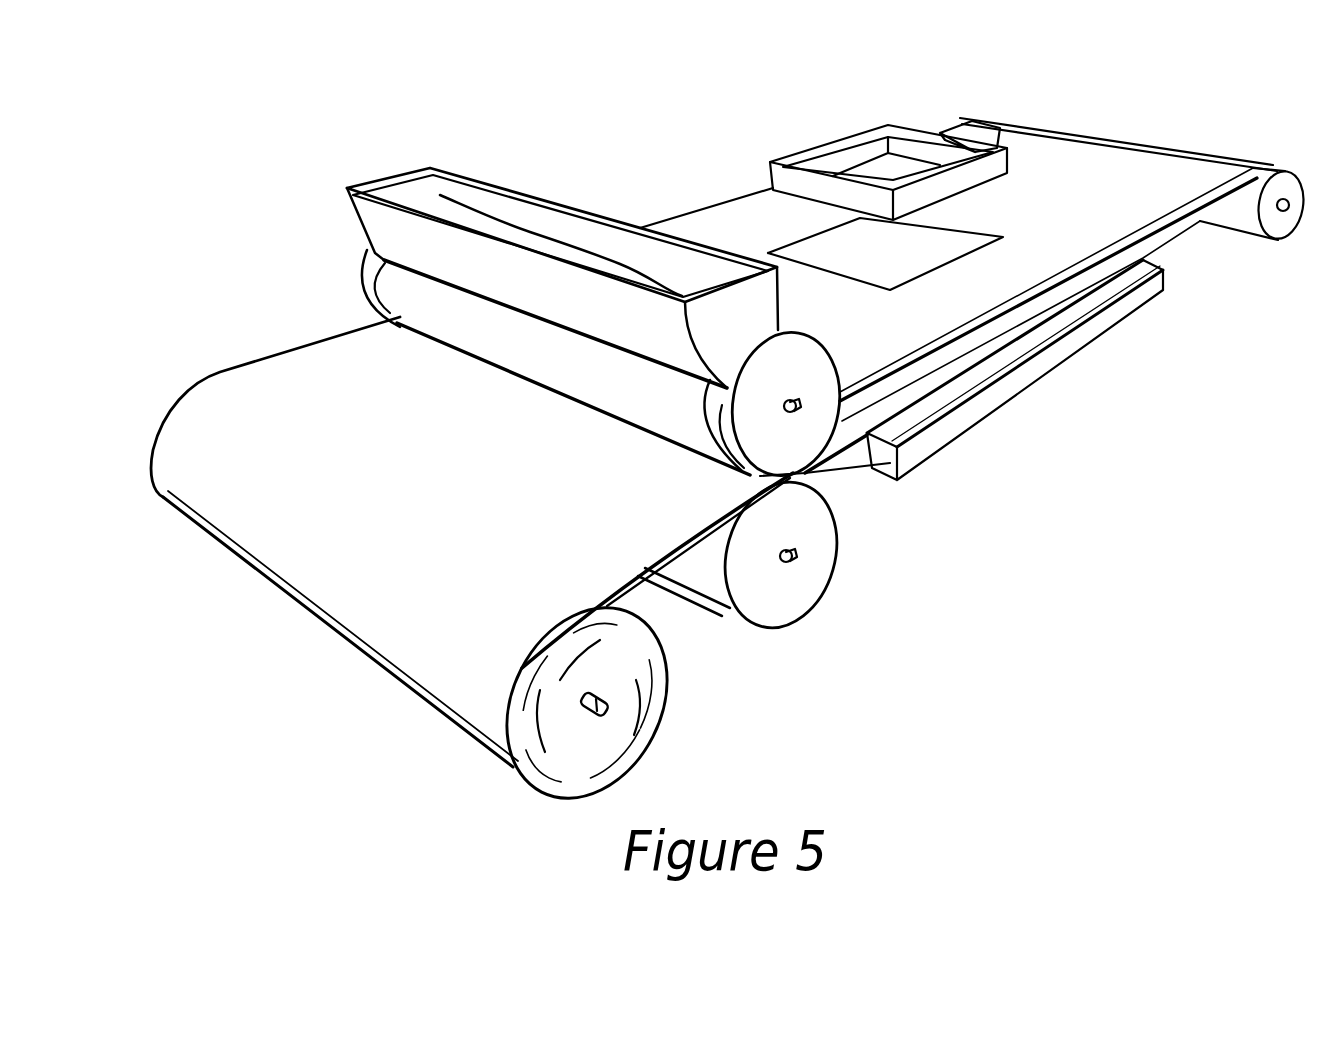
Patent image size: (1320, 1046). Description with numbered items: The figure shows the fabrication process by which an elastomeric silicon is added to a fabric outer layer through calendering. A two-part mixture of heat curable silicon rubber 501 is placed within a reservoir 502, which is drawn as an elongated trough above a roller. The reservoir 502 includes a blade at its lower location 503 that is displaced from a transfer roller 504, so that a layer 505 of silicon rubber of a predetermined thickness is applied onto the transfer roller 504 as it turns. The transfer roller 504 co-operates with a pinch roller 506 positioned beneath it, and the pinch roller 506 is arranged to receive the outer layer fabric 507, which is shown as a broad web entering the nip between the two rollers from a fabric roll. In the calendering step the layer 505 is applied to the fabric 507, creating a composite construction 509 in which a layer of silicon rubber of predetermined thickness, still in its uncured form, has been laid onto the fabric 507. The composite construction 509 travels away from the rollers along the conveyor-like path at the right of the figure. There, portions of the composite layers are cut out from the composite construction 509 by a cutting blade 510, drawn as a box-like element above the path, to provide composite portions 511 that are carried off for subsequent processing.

The heat curable silicon rubber 501 is at (440, 205).
The reservoir 502 is at (377, 223).
The blade at lower location of reservoir 503 is at (415, 292).
The transfer roller 504 is at (800, 473).
The layer of silicon rubber 505 is at (620, 397).
The pinch roller 506 is at (813, 551).
The outer layer fabric 507 is at (303, 378).
The composite construction 509 is at (553, 773).
The cutting blade 510 is at (850, 152).
The composite portions 511 is at (927, 250).